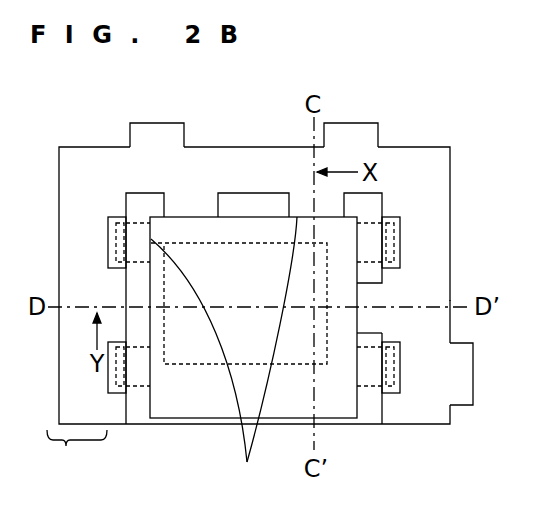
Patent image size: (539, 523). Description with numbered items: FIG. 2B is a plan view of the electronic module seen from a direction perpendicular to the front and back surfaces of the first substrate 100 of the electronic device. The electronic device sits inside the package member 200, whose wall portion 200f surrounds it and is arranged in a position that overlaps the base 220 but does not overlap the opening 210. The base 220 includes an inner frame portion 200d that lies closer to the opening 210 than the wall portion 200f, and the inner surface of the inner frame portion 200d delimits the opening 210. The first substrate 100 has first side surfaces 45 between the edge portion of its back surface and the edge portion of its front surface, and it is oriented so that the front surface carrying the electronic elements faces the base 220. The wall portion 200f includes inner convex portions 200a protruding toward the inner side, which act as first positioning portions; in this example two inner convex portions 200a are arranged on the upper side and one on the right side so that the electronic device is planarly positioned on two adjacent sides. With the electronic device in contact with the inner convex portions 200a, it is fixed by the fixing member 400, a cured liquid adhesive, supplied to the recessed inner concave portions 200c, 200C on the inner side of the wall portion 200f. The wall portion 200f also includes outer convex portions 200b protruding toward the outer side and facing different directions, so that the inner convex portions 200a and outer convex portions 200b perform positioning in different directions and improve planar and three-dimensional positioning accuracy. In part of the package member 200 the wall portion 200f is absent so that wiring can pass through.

The first substrate 100 is at (137, 291).
The package member 200 is at (412, 172).
The inner convex portions 200a is at (192, 207).
The outer convex portions 200b is at (157, 133).
The inner concave portions 200c is at (390, 213).
The inner concave portions 200C is at (397, 390).
The inner frame portion 200d is at (136, 393).
The wall portion 200f is at (208, 145).
The opening 210 is at (197, 364).
The base 220 is at (77, 456).
The fixing member 400 is at (403, 242).
The first side surfaces 45 is at (224, 357).